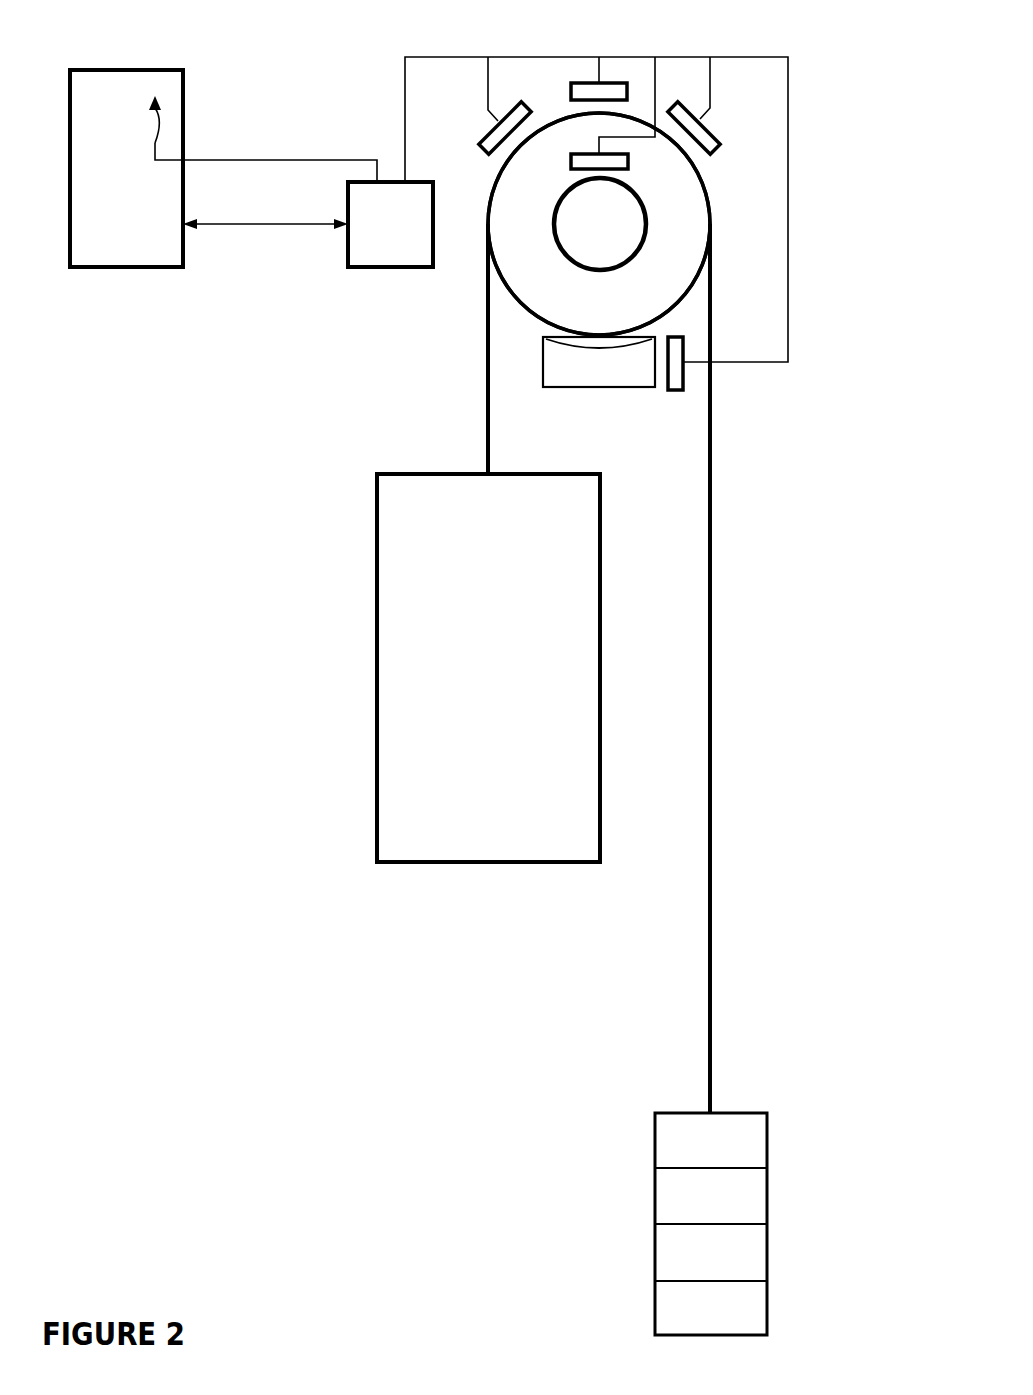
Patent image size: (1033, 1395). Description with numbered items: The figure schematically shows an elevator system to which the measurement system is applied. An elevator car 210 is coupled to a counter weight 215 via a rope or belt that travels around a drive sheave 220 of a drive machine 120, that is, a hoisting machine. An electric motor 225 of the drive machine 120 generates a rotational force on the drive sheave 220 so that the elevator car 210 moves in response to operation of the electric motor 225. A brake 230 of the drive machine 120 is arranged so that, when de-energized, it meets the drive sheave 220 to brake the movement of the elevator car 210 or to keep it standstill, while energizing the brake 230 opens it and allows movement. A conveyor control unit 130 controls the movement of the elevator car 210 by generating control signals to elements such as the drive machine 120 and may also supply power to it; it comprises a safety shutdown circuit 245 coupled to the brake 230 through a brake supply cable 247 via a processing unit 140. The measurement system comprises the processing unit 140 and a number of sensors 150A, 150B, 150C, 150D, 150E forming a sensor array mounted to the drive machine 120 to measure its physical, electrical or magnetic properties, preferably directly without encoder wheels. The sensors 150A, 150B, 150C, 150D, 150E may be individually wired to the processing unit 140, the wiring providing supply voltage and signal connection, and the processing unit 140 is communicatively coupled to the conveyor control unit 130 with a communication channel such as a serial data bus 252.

The drive machine 120 is at (620, 305).
The conveyor control unit 130 is at (108, 68).
The processing unit 140 is at (393, 268).
The sensor 150A is at (496, 123).
The sensor 150B is at (583, 83).
The sensor 150C is at (706, 129).
The sensor 150D is at (629, 160).
The sensor 150E is at (671, 391).
The elevator car 210 is at (374, 504).
The counter weight 215 is at (768, 1142).
The drive sheave 220 is at (683, 298).
The electric motor 225 is at (647, 203).
The brake 230 is at (587, 388).
The safety shutdown circuit 245 is at (163, 144).
The brake supply cable 247 is at (278, 158).
The serial data bus 252 is at (273, 226).